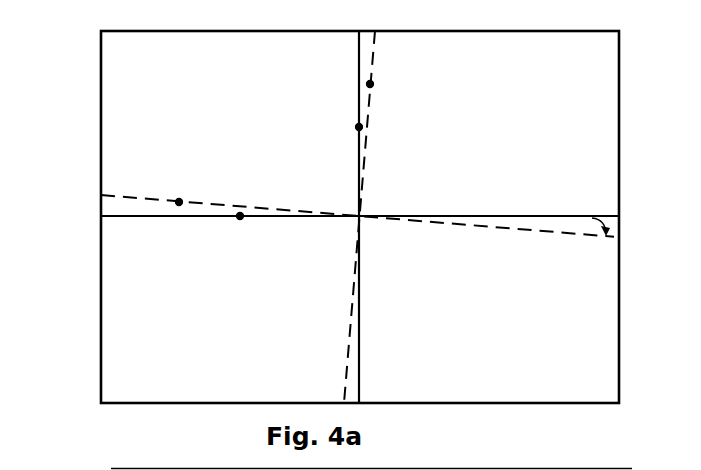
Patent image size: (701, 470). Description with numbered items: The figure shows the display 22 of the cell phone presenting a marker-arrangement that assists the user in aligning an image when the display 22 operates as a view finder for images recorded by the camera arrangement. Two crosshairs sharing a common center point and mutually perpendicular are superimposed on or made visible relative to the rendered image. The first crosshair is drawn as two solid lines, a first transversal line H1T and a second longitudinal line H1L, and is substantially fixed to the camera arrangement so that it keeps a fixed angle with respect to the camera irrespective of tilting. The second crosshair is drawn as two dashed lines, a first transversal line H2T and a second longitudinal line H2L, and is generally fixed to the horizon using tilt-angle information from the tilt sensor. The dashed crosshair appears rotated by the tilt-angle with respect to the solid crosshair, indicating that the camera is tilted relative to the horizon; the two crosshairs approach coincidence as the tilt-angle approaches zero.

The display 22 is at (106, 119).
The second longitudinal line H2L is at (369, 84).
The second longitudinal line H1L is at (358, 127).
The first transversal line H2T is at (179, 204).
The first transversal line H1T is at (240, 218).